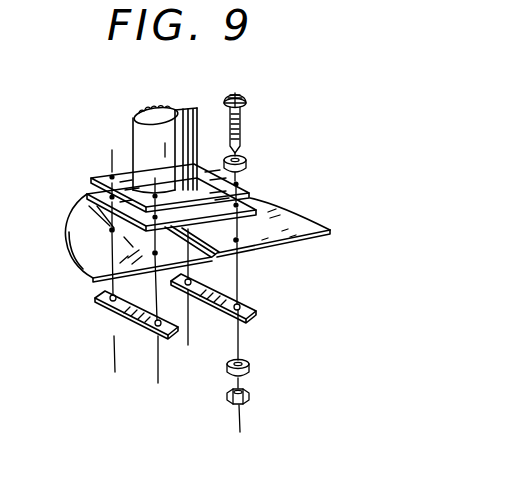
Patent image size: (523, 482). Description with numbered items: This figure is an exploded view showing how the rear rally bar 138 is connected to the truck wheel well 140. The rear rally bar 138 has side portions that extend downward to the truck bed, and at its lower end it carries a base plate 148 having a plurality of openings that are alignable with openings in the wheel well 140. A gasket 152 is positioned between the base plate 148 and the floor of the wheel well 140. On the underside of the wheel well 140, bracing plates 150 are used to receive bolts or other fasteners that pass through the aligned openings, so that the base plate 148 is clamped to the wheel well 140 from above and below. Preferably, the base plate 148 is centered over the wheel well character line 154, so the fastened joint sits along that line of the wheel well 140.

The rear rally bar 138 is at (132, 147).
The base plate 148 is at (251, 194).
The wheel well 140 is at (313, 237).
The gasket 152 is at (330, 230).
The wheel well character line 154 is at (216, 256).
The bracing plates 150 is at (214, 321).